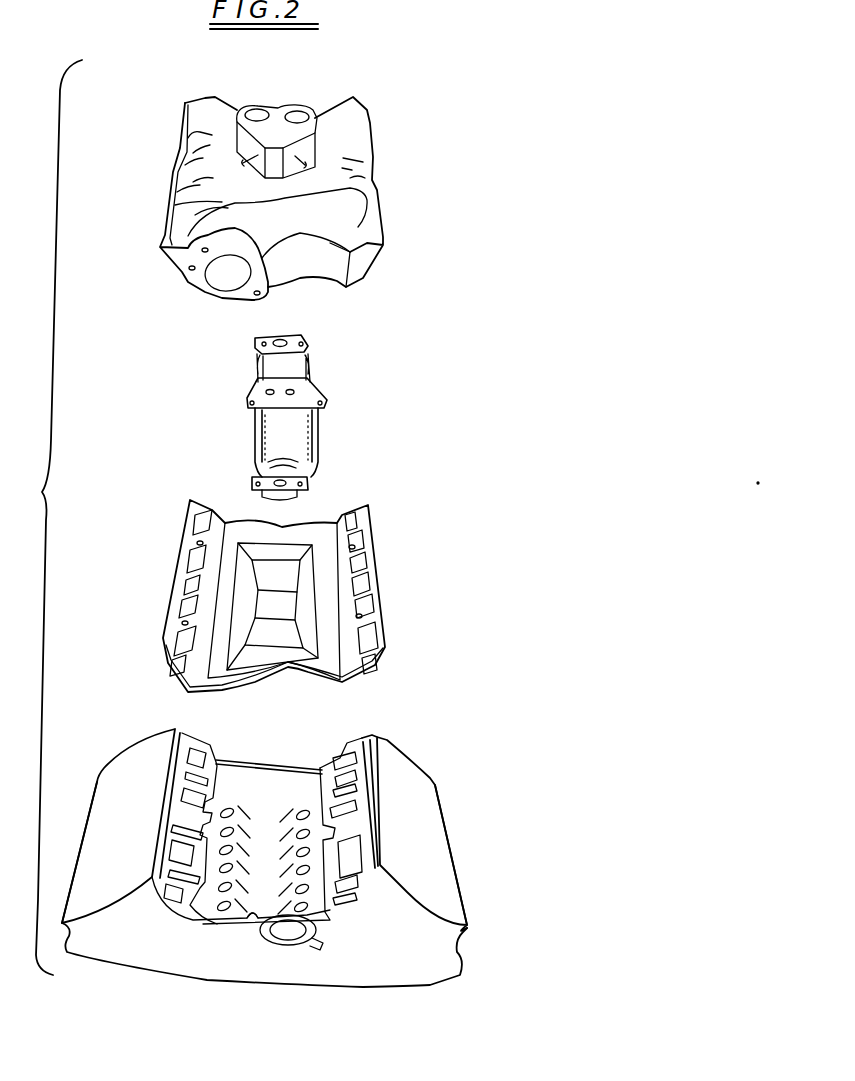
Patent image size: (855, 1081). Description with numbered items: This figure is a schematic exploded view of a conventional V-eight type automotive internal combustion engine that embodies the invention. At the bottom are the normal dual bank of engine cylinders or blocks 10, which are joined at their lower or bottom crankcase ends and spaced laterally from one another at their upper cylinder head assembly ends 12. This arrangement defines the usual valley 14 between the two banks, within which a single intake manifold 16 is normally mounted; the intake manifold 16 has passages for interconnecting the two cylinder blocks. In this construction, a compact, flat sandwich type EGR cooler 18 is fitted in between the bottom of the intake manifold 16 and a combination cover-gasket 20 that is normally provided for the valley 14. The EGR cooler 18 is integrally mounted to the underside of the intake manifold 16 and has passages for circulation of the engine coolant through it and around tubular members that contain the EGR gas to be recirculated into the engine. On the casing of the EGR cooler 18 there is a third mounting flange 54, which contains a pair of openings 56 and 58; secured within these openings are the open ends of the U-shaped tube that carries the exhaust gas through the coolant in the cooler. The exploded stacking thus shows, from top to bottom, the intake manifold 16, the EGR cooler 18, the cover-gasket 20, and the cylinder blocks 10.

The engine cylinders or blocks 10 is at (112, 778).
The upper cylinder head assembly ends 12 is at (103, 822).
The valley 14 is at (250, 920).
The intake manifold 16 is at (367, 159).
The EGR cooler 18 is at (297, 417).
The combination cover-gasket 20 is at (401, 593).
The third mounting flange 54 is at (327, 407).
The opening 56 is at (293, 390).
The opening 58 is at (270, 390).